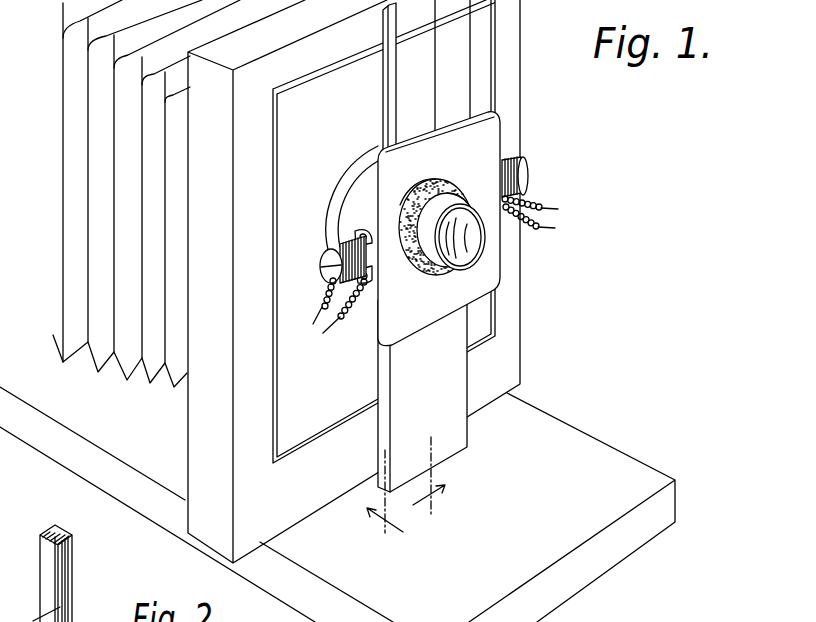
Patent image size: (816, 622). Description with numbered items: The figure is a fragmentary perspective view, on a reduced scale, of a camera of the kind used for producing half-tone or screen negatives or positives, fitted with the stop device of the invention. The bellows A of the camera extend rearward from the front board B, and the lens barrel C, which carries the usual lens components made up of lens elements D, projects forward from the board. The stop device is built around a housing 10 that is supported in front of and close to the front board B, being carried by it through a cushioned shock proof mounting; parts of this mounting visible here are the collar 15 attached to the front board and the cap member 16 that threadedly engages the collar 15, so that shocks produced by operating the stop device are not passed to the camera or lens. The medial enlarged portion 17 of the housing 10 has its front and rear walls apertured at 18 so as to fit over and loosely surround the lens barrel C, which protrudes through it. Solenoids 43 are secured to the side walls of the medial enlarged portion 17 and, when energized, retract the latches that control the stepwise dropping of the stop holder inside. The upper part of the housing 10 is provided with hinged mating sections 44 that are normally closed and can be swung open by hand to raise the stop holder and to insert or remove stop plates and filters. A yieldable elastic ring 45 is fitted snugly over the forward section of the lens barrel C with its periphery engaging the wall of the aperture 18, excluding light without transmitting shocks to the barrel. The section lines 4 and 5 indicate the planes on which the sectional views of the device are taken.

The bellows A is at (152, 355).
The front board B is at (505, 360).
The lens barrel C is at (449, 204).
The lens elements D is at (462, 241).
The section line 4- 4 is at (385, 506).
The section line 5- 5 is at (429, 482).
The housing 10 is at (467, 308).
The collar 15 is at (337, 199).
The cap member 16 is at (345, 222).
The medial enlarged portion 17 is at (487, 128).
The aperture 18 is at (417, 186).
The solenoid 43 is at (326, 275).
The hinged mating sections 44 is at (405, 78).
The yieldable elastic ring 45 is at (408, 272).